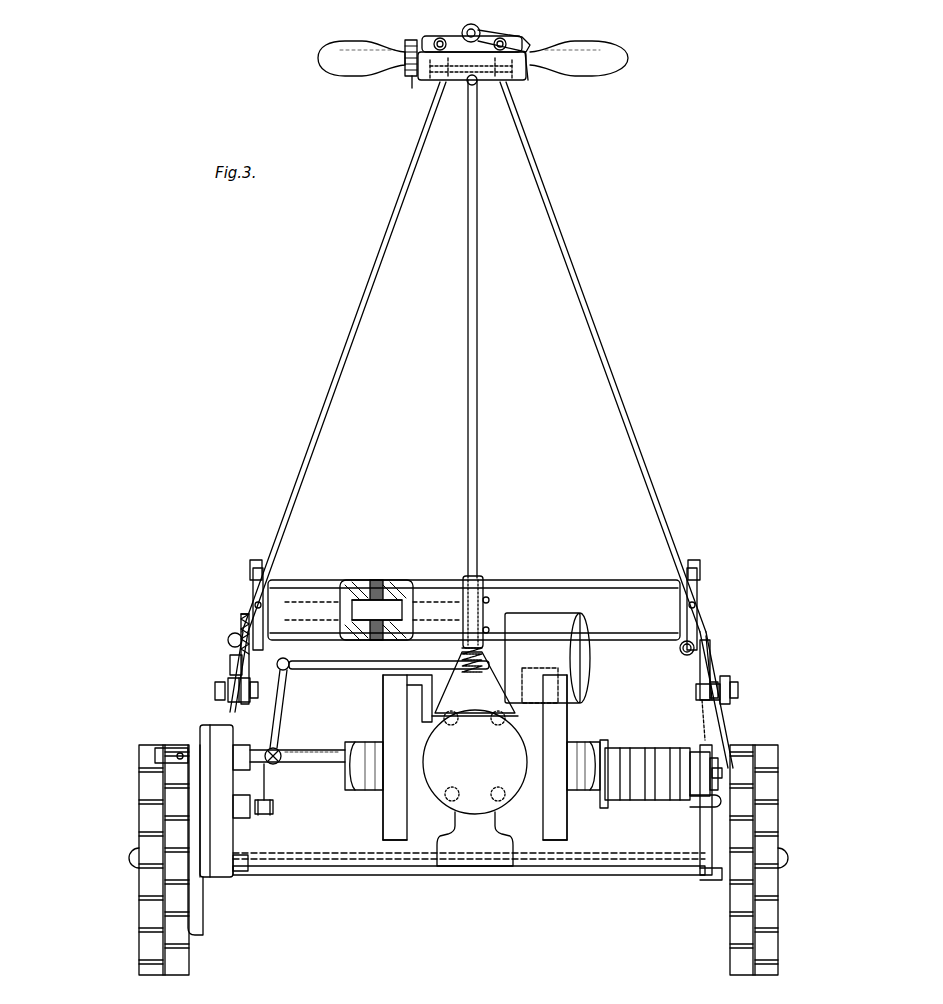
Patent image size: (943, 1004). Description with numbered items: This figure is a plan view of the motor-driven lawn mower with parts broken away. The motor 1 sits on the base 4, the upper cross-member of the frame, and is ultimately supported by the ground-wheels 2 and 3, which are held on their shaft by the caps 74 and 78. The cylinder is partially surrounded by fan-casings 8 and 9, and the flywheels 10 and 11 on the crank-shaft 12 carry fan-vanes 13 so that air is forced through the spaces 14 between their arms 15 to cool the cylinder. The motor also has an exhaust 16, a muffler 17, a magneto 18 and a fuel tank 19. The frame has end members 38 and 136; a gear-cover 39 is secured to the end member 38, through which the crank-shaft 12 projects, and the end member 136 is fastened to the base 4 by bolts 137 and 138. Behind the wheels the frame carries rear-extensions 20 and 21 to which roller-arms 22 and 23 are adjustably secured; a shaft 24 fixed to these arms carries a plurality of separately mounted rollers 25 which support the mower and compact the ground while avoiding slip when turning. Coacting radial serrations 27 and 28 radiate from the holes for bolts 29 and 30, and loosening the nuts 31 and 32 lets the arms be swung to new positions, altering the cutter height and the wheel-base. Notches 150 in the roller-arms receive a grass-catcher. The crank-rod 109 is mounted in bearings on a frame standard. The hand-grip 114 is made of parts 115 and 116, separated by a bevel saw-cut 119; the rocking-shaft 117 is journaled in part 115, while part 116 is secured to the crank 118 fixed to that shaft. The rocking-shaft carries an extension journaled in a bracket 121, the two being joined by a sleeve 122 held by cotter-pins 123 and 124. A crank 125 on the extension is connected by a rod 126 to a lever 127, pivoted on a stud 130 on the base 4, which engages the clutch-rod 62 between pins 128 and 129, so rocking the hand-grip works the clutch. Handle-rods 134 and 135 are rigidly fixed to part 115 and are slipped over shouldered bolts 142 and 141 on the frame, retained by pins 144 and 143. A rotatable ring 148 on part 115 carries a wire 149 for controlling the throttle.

The motor 1 is at (475, 762).
The ground-wheel 2 is at (139, 776).
The ground-wheel 3 is at (770, 818).
The base 4 is at (362, 875).
The fan-casing 8 is at (546, 757).
The fan-casing 9 is at (404, 757).
The flywheel 10 is at (565, 828).
The flywheel 11 is at (382, 828).
The crank-shaft 12 is at (168, 752).
The fan-vanes 13 is at (412, 698).
The spaces 14 is at (372, 740).
The arms 15 is at (472, 757).
The exhaust 16 is at (475, 756).
The muffler 17 is at (470, 868).
The magneto 18 is at (648, 748).
The fuel tank 19 is at (560, 660).
The rear-extension 20 is at (703, 676).
The rear-extension 21 is at (241, 648).
The roller-arm 22 is at (697, 612).
The roller-arm 23 is at (253, 615).
The shaft 24 is at (400, 598).
The rollers 25 is at (305, 580).
The radial serrations 27 is at (228, 640).
The radial serrations 28 is at (258, 700).
The bolt 29 is at (680, 652).
The bolt 30 is at (258, 652).
The nut 31 is at (712, 644).
The nut 32 is at (230, 664).
The end member 38 is at (225, 740).
The gear-cover 39 is at (203, 735).
The clutch-rod 62 is at (274, 808).
The cap 74 is at (132, 859).
The cap 78 is at (786, 859).
The crank-rod 109 is at (690, 806).
The hand-grip 114 is at (318, 58).
The part 115 is at (366, 49).
The part 116 is at (597, 47).
The rocking-shaft 117 is at (468, 240).
The crank 118 is at (498, 38).
The bevel saw-cut 119 is at (528, 78).
The bracket 121 is at (477, 690).
The sleeve 122 is at (466, 582).
The cotter-pin 123 is at (488, 598).
The cotter-pin 124 is at (462, 636).
The crank 125 is at (502, 660).
The rod 126 is at (335, 669).
The lever 127 is at (276, 712).
The pin 128 is at (258, 816).
The pin 129 is at (272, 814).
The stud 130 is at (279, 751).
The handle-rod 134 is at (339, 364).
The handle-rod 135 is at (602, 342).
The end member 136 is at (700, 852).
The bolt 137 is at (712, 882).
The bolt 138 is at (722, 772).
The shouldered bolt 141 is at (738, 690).
The shouldered bolt 142 is at (215, 690).
The pin 143 is at (730, 684).
The pin 144 is at (228, 696).
The rotatable ring 148 is at (411, 40).
The wire 149 is at (412, 82).
The notches 150 is at (250, 572).